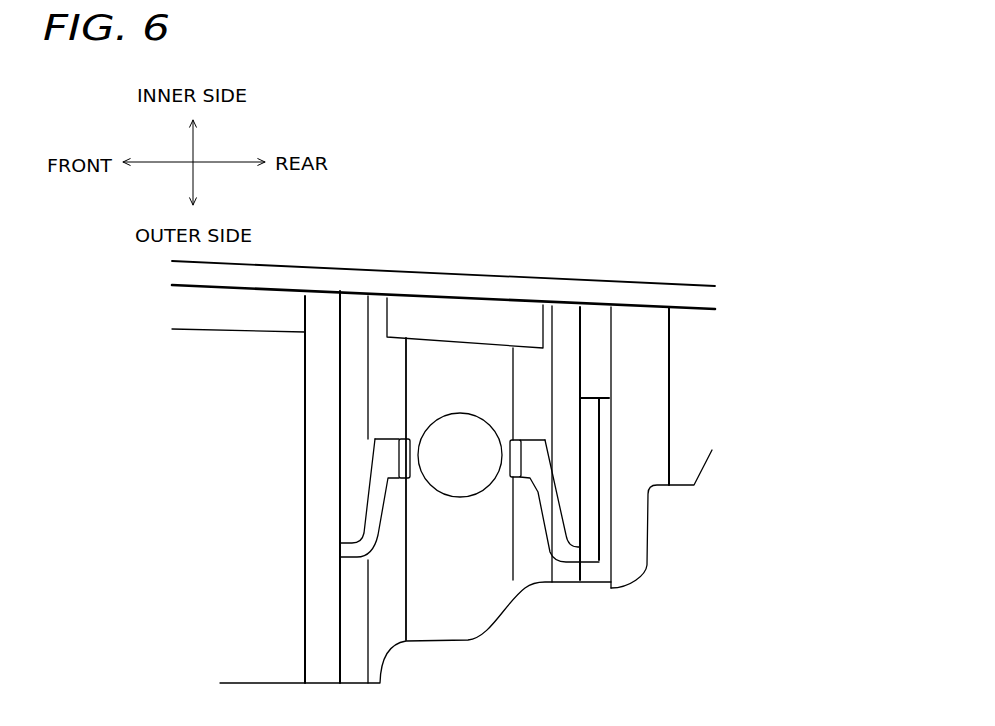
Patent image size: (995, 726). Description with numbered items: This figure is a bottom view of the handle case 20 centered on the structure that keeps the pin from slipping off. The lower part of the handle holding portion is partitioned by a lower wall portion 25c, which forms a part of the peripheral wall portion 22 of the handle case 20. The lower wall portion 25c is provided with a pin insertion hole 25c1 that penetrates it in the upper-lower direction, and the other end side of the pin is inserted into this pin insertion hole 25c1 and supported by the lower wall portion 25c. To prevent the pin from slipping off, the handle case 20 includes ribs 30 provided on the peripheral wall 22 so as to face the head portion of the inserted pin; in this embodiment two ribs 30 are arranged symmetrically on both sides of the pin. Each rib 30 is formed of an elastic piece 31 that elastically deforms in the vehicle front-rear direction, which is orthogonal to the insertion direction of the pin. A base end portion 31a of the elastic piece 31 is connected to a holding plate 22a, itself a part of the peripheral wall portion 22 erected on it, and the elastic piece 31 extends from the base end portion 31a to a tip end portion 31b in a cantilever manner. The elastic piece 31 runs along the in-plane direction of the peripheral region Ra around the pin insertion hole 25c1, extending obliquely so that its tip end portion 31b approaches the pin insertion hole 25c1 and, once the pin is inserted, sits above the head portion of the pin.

The handle case 20 is at (627, 273).
The peripheral wall portion 22 is at (459, 442).
The holding plate 22a is at (300, 535).
The lower wall portion 25c is at (462, 423).
The pin insertion hole 25c1 is at (430, 428).
The rib 30 is at (496, 515).
The elastic piece 31 is at (498, 515).
The base end portion 31a is at (358, 553).
The tip end portion 31b is at (387, 452).
The peripheral region Ra is at (475, 518).